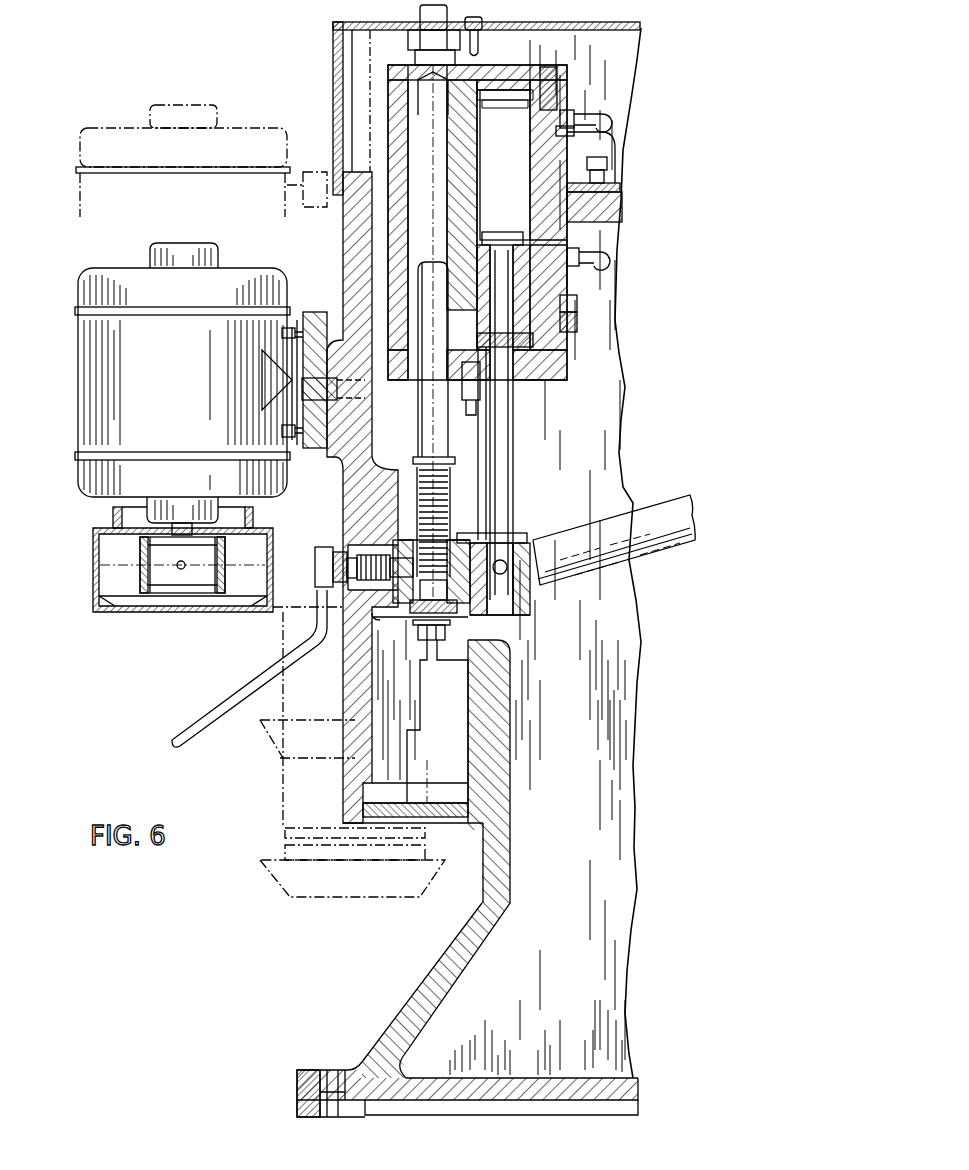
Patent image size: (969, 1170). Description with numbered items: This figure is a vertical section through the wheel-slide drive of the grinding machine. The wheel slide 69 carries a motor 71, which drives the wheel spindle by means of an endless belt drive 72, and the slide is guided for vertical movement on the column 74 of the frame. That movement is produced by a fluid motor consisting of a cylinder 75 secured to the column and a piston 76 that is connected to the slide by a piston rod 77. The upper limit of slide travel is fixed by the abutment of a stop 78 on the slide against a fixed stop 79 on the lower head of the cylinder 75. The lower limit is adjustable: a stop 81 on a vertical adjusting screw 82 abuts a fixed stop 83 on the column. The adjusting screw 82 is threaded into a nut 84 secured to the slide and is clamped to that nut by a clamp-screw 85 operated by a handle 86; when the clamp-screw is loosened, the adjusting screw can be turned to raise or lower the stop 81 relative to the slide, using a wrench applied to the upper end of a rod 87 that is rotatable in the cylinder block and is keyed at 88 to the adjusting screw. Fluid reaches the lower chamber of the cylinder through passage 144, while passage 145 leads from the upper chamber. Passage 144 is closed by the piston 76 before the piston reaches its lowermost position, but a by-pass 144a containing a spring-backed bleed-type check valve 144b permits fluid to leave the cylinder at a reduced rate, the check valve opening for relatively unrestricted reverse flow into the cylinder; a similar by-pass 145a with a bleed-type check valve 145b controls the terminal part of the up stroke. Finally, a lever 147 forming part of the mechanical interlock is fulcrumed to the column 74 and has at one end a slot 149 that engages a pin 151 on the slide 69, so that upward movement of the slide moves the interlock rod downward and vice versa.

The wheel slide 69 is at (358, 513).
The motor 71 is at (118, 386).
The endless belt drive 72 is at (140, 557).
The column 74 is at (492, 677).
The cylinder 75 is at (545, 153).
The piston 76 is at (520, 282).
The piston rod 77 is at (500, 498).
The stop 78 is at (482, 532).
The fixed stop 79 is at (472, 384).
The stop 81 is at (445, 615).
The adjusting screw 82 is at (440, 505).
The fixed stop 83 is at (425, 648).
The nut 84 is at (413, 628).
The clamp-screw 85 is at (370, 560).
The handle 86 is at (272, 660).
The rod 87 is at (410, 237).
The key 88 is at (423, 272).
The passage 144 is at (578, 250).
The by-pass 144a is at (555, 300).
The bleed-type check valve 144b is at (570, 325).
The passage 145 is at (582, 135).
The by-pass 145a is at (556, 115).
The bleed-type check valve 145b is at (580, 114).
The lever 147 is at (655, 515).
The slot 149 is at (533, 587).
The pin 151 is at (535, 545).